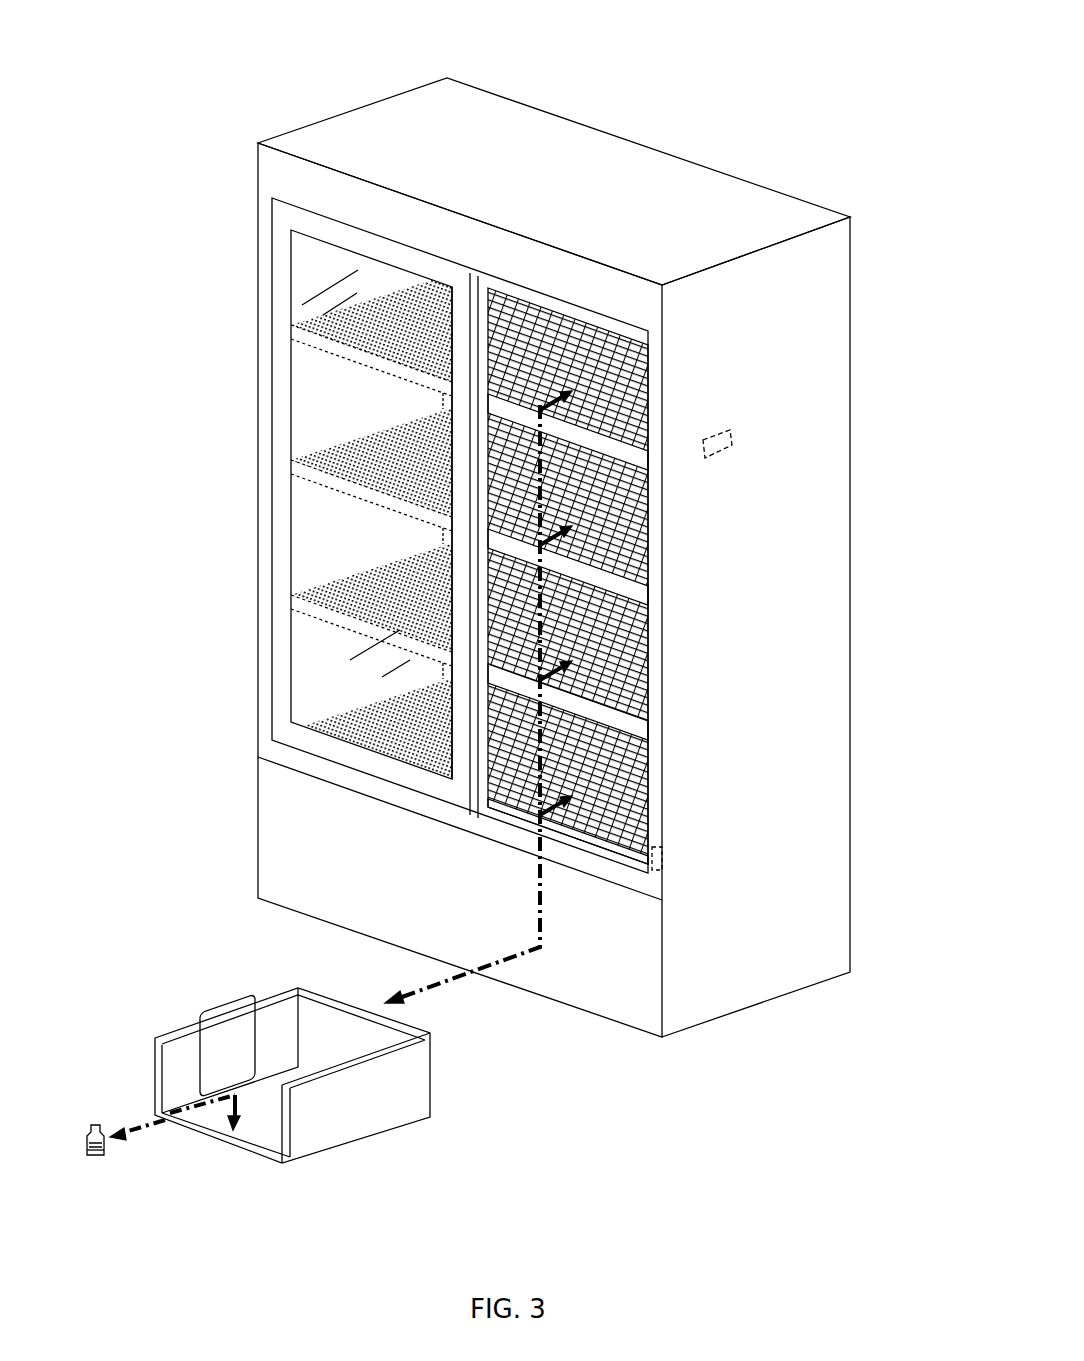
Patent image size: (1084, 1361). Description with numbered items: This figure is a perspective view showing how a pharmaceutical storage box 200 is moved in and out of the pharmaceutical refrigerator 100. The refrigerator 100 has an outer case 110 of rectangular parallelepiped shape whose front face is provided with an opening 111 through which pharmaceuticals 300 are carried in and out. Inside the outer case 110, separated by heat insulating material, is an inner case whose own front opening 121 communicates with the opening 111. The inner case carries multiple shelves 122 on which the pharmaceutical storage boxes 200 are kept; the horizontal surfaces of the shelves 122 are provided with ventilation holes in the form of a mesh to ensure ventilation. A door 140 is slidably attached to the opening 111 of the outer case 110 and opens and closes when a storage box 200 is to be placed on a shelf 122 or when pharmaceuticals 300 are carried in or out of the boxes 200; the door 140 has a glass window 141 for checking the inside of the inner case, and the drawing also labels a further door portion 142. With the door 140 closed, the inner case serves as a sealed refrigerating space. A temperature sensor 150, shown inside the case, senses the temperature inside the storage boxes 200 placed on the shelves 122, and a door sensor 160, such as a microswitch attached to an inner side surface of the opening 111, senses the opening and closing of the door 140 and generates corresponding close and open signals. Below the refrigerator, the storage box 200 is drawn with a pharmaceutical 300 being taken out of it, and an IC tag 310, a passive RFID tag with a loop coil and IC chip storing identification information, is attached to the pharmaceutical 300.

The pharmaceutical refrigerator 100 is at (706, 80).
The outer case 110 is at (832, 482).
The opening 111 is at (652, 620).
The opening 121 is at (612, 328).
The shelves 122 is at (647, 377).
The door 140 is at (280, 395).
The glass window 141 is at (310, 437).
The second door 142 is at (310, 552).
The temperature sensor 150 is at (733, 436).
The door sensor 160 is at (663, 850).
The pharmaceutical storage box 200 is at (450, 1080).
The pharmaceutical 300 is at (100, 1148).
The IC tag 310 is at (92, 1157).